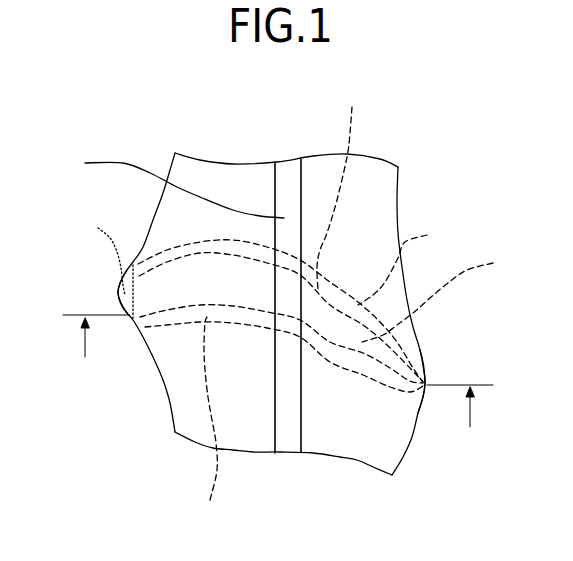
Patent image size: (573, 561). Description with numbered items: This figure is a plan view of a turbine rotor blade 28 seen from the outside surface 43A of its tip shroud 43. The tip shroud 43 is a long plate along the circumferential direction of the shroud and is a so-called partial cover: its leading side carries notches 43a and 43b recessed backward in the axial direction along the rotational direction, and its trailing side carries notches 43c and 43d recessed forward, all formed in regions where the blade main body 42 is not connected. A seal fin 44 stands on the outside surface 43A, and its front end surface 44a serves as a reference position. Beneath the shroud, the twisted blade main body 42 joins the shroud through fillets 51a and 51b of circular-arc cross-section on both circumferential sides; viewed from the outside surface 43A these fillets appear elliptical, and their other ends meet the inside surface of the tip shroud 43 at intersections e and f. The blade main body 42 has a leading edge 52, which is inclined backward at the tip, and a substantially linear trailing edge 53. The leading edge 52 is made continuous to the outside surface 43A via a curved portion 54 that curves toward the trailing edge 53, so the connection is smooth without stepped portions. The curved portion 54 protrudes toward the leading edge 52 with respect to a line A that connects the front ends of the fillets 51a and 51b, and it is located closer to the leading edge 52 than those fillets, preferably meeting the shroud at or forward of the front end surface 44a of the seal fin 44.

The rotor blade 28 is at (418, 127).
The blade main body 42 is at (441, 298).
The tip shroud 43 is at (305, 311).
The notch 43a is at (170, 405).
The notch 43b is at (168, 158).
The notch 43c is at (392, 475).
The notch 43d is at (400, 192).
The outside surface of the tip shroud 43A is at (257, 442).
The seal fin 44 is at (171, 186).
The front end surface of the seal fin 44a is at (275, 172).
The fillet 51a is at (210, 424).
The fillet 51b is at (342, 187).
The leading edge 52 is at (118, 300).
The trailing edge 53 is at (425, 383).
The curved portion 54 is at (118, 293).
The line A is at (108, 267).
The intersection e is at (350, 373).
The intersection f is at (397, 265).